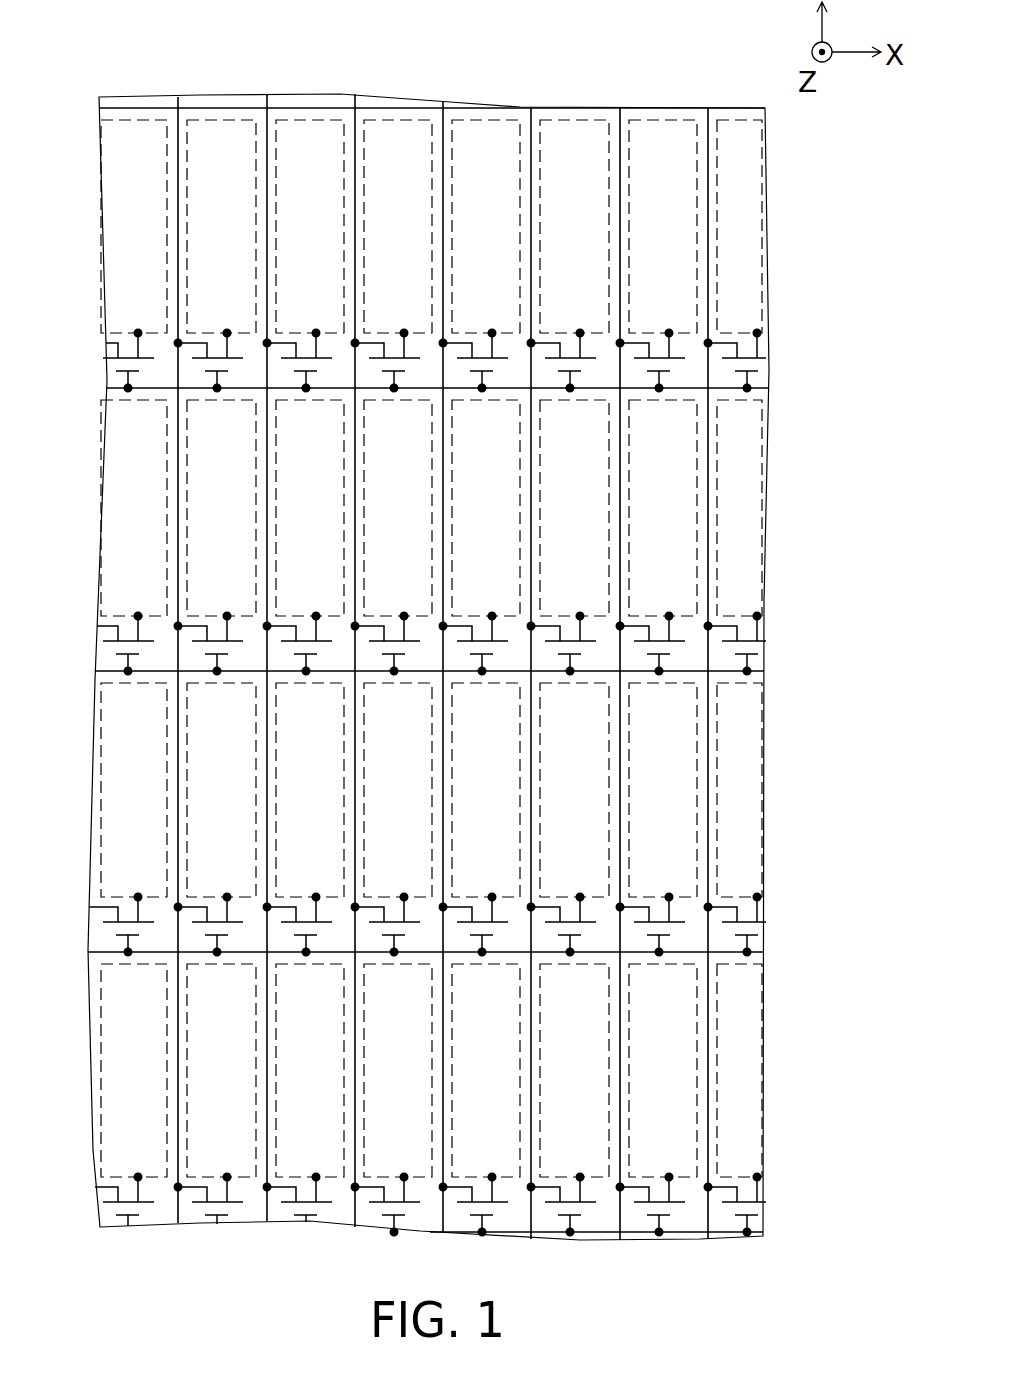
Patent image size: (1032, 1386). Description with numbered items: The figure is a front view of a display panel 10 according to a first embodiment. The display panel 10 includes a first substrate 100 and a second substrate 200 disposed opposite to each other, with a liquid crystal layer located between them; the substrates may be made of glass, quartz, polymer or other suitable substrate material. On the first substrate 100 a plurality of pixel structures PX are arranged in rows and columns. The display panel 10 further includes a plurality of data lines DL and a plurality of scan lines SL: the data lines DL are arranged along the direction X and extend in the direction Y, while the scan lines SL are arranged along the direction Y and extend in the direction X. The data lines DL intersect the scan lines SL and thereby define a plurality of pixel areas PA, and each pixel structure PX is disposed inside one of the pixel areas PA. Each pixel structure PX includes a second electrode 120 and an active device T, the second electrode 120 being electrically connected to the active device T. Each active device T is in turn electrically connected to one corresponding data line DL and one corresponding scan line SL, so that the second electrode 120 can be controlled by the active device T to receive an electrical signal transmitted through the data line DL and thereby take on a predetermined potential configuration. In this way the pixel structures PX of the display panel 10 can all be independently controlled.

The display panel 10 is at (866, 1253).
The first substrate 100 is at (491, 667).
The second substrate 200 is at (771, 371).
The second electrode 120 is at (718, 562).
The scan line SL is at (135, 110).
The data line DL is at (268, 138).
The pixel area PA is at (581, 142).
The pixel structure PX is at (848, 562).
The active device T is at (776, 652).